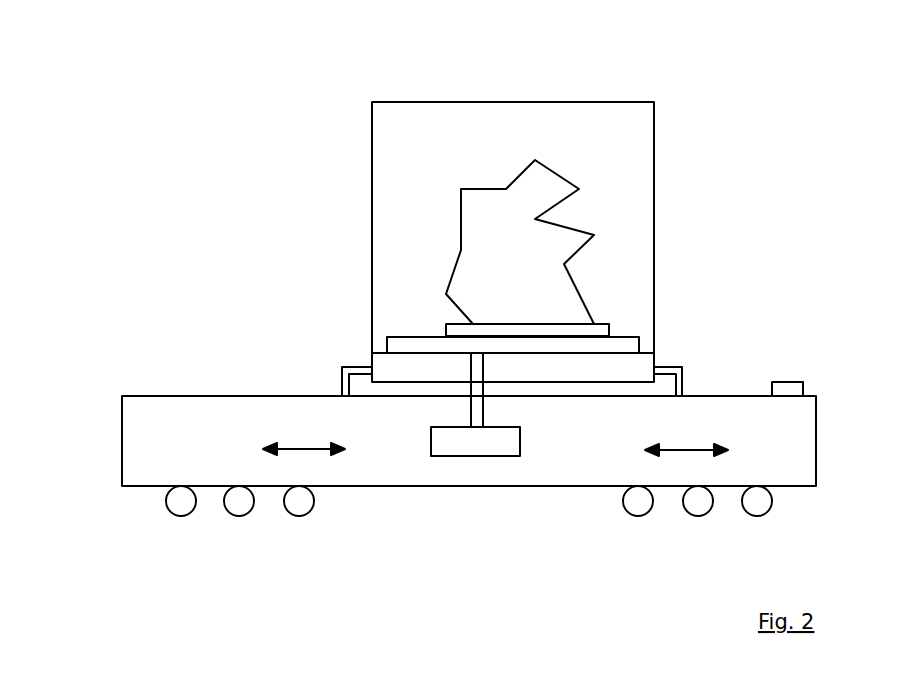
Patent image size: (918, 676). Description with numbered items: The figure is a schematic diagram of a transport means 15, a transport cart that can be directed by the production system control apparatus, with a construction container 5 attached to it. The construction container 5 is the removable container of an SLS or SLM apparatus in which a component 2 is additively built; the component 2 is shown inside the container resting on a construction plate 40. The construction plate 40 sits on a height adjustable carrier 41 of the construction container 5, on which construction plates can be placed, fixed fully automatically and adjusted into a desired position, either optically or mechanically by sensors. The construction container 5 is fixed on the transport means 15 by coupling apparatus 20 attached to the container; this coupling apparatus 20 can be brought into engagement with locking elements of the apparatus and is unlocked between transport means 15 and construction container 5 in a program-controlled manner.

The component 2 is at (526, 205).
The construction container 5 is at (654, 185).
The transport means 15 is at (183, 449).
The coupling apparatus 20 is at (342, 380).
The construction plate 40 is at (461, 330).
The height adjustable carrier 41 is at (418, 347).